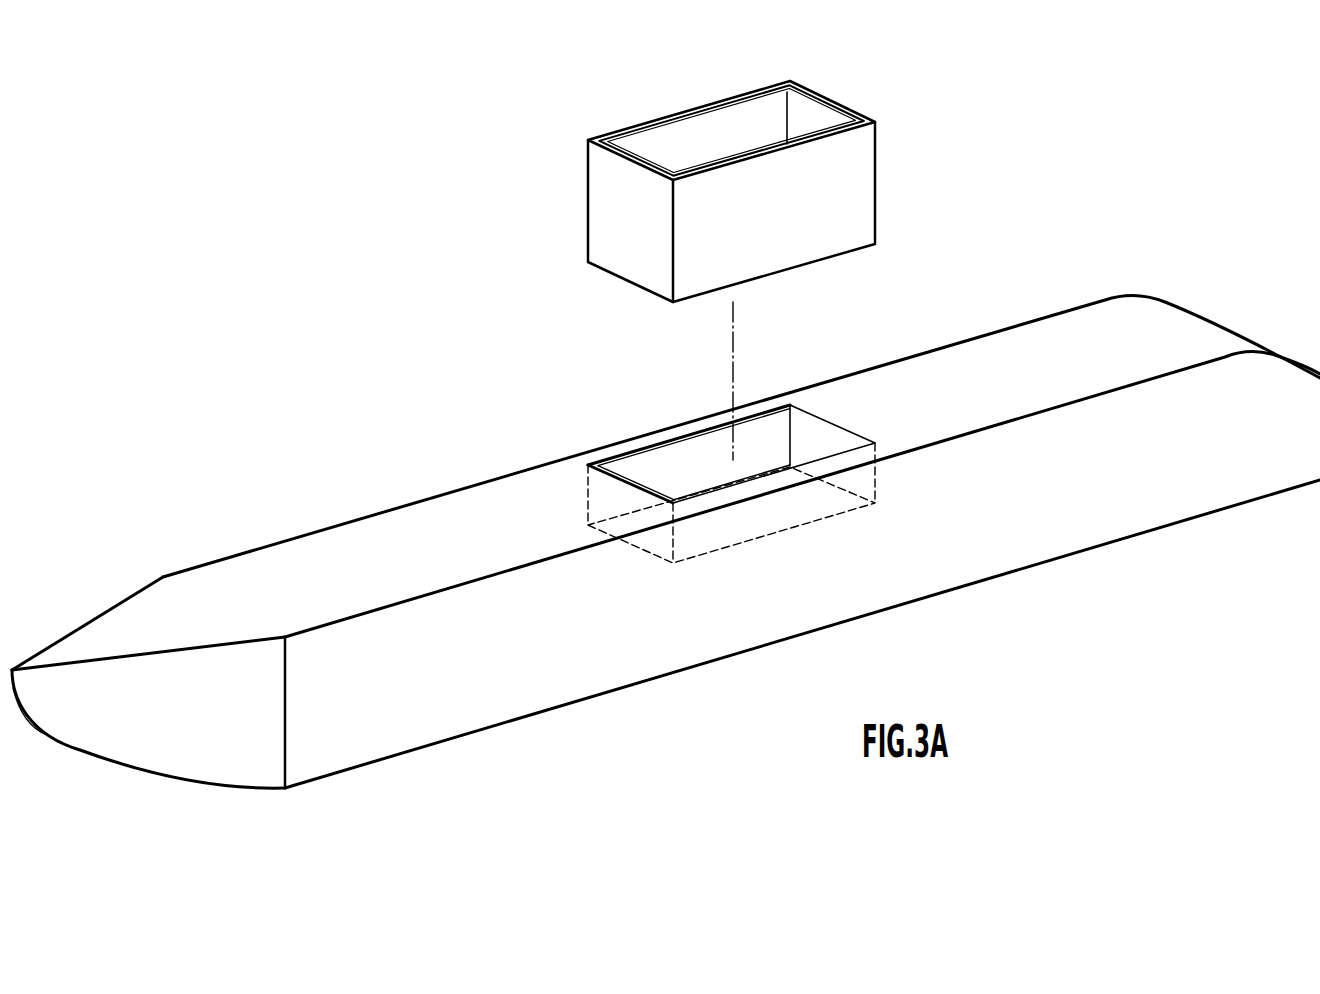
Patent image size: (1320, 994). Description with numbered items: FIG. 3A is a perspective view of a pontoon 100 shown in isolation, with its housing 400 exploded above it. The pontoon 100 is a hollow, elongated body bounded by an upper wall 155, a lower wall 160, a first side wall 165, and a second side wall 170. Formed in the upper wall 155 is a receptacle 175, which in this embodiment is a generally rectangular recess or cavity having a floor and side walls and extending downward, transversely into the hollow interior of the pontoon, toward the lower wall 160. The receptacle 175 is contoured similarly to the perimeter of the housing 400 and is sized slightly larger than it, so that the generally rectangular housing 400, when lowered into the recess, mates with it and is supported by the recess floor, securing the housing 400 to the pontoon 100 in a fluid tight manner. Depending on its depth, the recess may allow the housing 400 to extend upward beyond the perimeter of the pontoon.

The projectile body 100 is at (298, 420).
The upper wall 155 is at (458, 523).
The lower wall 160 is at (720, 663).
The first side wall 165 is at (1155, 482).
The second side wall 170 is at (940, 347).
The receptacle 175 is at (815, 435).
The housing 400 is at (875, 193).